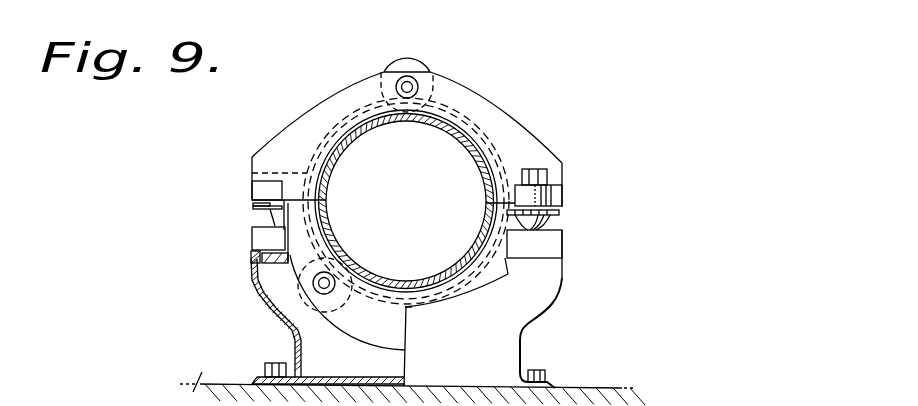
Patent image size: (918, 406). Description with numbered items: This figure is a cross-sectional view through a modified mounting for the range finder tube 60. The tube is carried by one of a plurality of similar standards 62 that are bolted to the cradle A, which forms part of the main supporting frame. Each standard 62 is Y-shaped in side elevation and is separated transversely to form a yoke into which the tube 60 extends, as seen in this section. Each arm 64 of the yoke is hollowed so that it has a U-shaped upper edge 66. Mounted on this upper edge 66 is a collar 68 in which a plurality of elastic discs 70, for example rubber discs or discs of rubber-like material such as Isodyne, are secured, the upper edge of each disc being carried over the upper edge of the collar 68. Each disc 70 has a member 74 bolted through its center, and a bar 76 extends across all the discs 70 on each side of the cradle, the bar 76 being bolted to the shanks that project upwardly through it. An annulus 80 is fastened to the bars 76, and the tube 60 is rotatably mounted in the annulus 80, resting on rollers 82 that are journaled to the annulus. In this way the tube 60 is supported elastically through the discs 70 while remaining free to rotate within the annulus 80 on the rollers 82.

The range finder tube 60 is at (334, 150).
The standard 62 is at (293, 343).
The arm 64 is at (265, 303).
The U-shaped upper edge 66 is at (258, 253).
The collar 68 is at (257, 238).
The elastic disc 70 is at (290, 255).
The member 74 is at (256, 207).
The bar 76 is at (263, 190).
The annulus 80 is at (290, 137).
The roller 82 is at (413, 66).
The cradle A is at (198, 372).